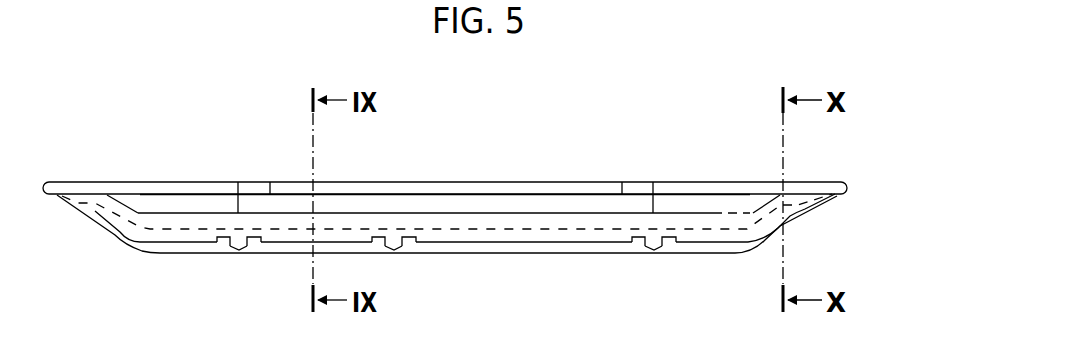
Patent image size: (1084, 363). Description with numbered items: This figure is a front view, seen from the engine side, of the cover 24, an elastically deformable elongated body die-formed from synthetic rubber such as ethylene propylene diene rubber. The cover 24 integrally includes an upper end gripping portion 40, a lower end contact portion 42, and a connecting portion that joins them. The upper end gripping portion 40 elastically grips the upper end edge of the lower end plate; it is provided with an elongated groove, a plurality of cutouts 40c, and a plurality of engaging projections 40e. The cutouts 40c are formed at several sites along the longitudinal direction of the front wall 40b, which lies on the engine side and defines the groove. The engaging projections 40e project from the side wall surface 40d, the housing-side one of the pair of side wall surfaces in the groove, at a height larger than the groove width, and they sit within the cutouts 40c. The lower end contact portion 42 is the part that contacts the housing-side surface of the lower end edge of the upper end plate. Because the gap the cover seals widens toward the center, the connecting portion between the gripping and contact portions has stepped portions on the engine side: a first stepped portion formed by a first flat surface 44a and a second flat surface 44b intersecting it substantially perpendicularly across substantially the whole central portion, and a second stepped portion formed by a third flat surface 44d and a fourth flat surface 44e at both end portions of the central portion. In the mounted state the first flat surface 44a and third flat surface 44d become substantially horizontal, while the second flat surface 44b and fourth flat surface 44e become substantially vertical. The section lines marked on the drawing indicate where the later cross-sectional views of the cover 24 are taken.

The cover 24 is at (484, 196).
The lower end contact portion 42 is at (535, 176).
The first flat surface 44a is at (468, 196).
The second flat surface 44b is at (225, 206).
The third flat surface 44d is at (447, 138).
The fourth flat surface 44e is at (158, 234).
The upper end gripping portion 40 is at (447, 272).
The front wall 40b is at (130, 233).
The cutouts 40c is at (222, 244).
The side wall surface 40d is at (168, 247).
The engaging projections 40e is at (240, 248).